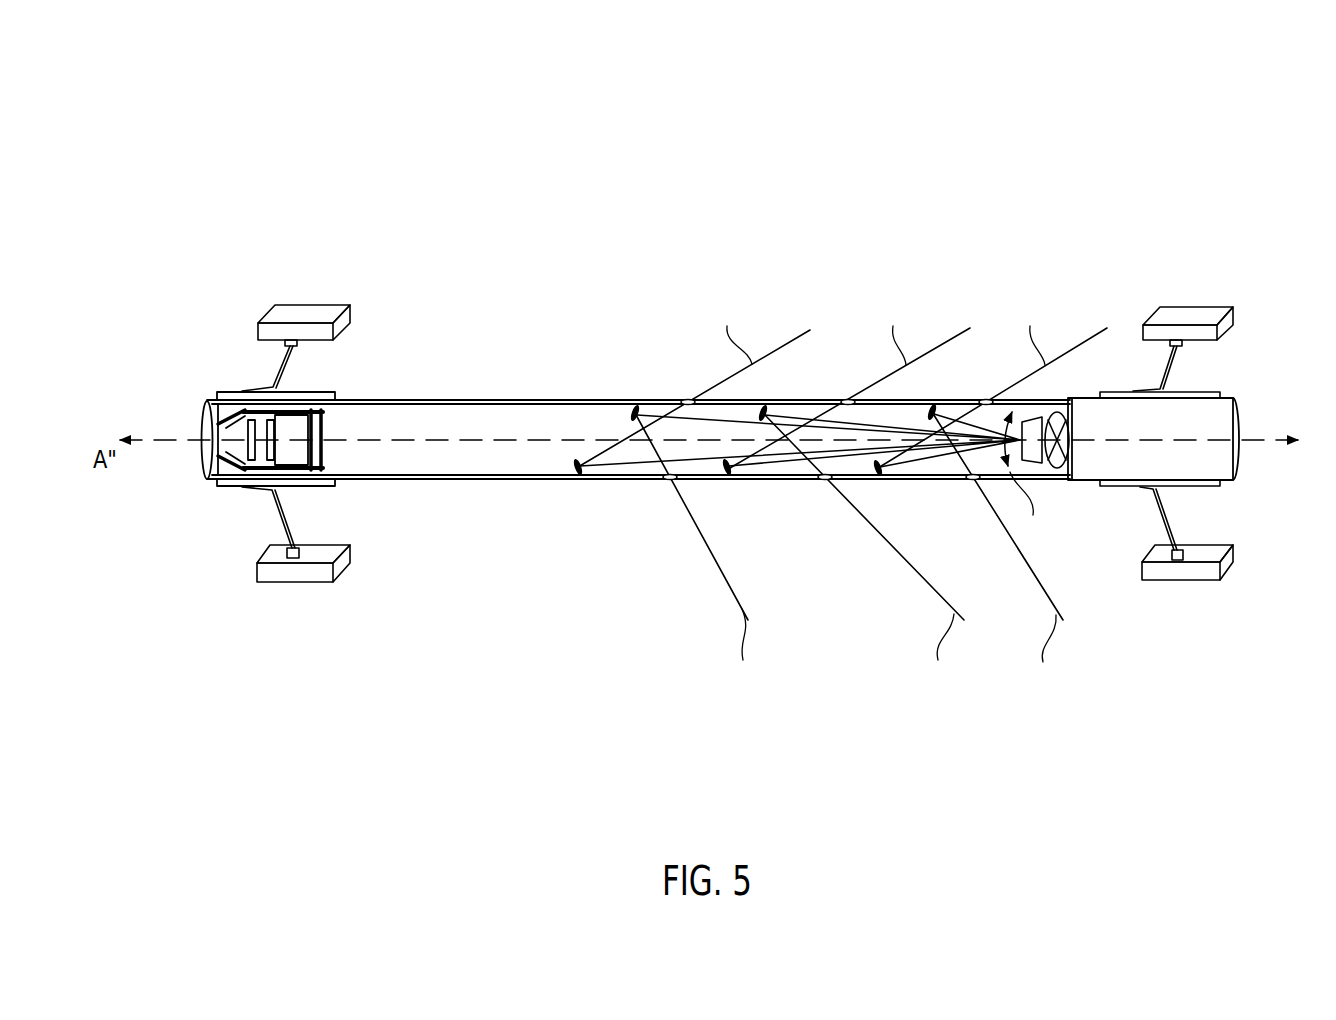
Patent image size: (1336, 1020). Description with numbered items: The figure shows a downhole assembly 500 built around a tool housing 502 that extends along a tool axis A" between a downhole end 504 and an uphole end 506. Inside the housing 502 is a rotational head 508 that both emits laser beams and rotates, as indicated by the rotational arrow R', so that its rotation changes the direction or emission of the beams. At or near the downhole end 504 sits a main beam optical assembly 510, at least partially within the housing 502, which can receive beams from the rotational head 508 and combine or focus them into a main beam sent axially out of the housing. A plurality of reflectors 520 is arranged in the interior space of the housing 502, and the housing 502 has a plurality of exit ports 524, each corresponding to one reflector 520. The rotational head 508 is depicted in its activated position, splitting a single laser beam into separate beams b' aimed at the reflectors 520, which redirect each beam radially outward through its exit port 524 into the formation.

The downhole assembly 500 is at (247, 82).
The tool housing 502 is at (428, 400).
The downhole end 504 is at (243, 612).
The uphole end 506 is at (1206, 612).
The rotational head 508 is at (1052, 466).
The main beam optical assembly 510 is at (190, 382).
The reflectors 520 is at (760, 466).
The exit ports 524 is at (823, 441).